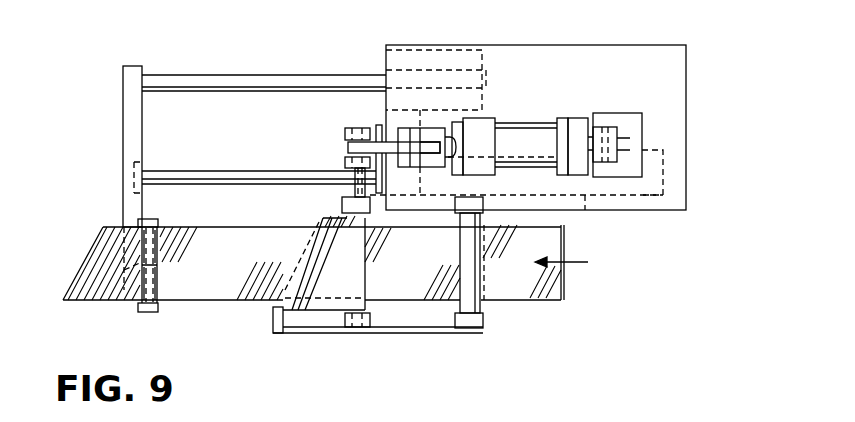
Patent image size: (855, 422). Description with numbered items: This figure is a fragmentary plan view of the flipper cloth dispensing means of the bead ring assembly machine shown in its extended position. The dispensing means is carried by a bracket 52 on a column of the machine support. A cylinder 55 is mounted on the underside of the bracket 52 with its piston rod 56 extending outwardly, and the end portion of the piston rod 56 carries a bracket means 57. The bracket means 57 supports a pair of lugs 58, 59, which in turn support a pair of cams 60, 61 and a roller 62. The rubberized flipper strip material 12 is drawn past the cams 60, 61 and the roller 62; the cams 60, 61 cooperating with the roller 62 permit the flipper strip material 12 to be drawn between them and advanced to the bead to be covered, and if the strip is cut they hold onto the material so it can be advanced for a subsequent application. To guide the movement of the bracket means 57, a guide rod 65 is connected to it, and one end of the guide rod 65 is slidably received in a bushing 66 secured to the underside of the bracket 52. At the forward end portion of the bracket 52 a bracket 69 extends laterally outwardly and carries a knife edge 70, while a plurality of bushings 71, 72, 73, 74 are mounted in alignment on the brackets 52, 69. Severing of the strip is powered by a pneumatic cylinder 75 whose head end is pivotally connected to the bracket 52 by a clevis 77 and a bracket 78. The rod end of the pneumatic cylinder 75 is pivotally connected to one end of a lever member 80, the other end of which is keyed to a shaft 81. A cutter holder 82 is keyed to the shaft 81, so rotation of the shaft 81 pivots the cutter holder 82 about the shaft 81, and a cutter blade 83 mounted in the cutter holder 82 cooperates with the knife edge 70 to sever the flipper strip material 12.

The flipper strip material 12 is at (217, 290).
The bracket 52 is at (583, 57).
The cylinder 55 is at (585, 210).
The piston rod 56 is at (223, 177).
The bracket means 57 is at (128, 117).
The lug 58 is at (153, 218).
The lug 59 is at (147, 310).
The cam 60 is at (140, 242).
The cam 61 is at (145, 288).
The roller 62 is at (147, 268).
The guide rod 65 is at (233, 78).
The bushing 66 is at (432, 48).
The bracket 69 is at (433, 325).
The knife edge 70 is at (270, 308).
The bushing 71 is at (347, 133).
The bushing 72 is at (345, 148).
The bushing 73 is at (342, 206).
The bushing 74 is at (370, 318).
The pneumatic cylinder 75 is at (520, 138).
The clevis 77 is at (614, 130).
The bracket 78 is at (640, 143).
The lever member 80 is at (378, 132).
The shaft 81 is at (345, 163).
The cutter holder 82 is at (342, 277).
The cutter blade 83 is at (315, 268).